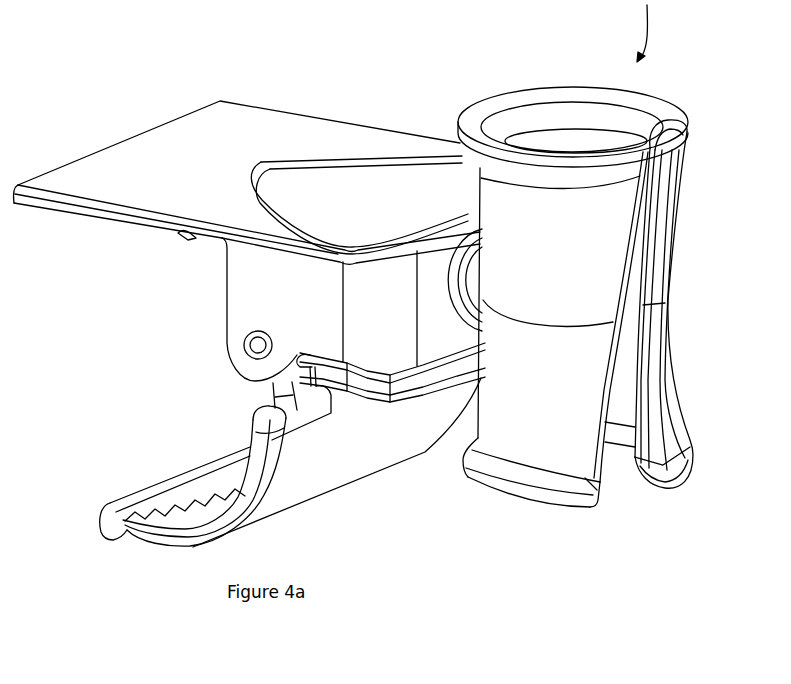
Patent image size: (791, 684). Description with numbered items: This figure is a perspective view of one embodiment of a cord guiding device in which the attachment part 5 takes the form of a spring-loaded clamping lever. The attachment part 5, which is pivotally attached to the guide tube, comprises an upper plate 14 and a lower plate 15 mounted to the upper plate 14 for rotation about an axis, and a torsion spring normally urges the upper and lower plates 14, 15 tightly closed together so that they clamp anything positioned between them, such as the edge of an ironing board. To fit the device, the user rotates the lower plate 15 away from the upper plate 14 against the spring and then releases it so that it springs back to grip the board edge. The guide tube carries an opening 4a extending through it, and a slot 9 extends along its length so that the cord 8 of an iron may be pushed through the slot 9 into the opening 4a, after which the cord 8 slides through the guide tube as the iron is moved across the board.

The attachment part 5 is at (366, 330).
The upper plate 14 is at (201, 129).
The opening 4a is at (553, 142).
The cord 8 is at (258, 343).
The slot 9 is at (627, 408).
The lower plate 15 is at (160, 540).